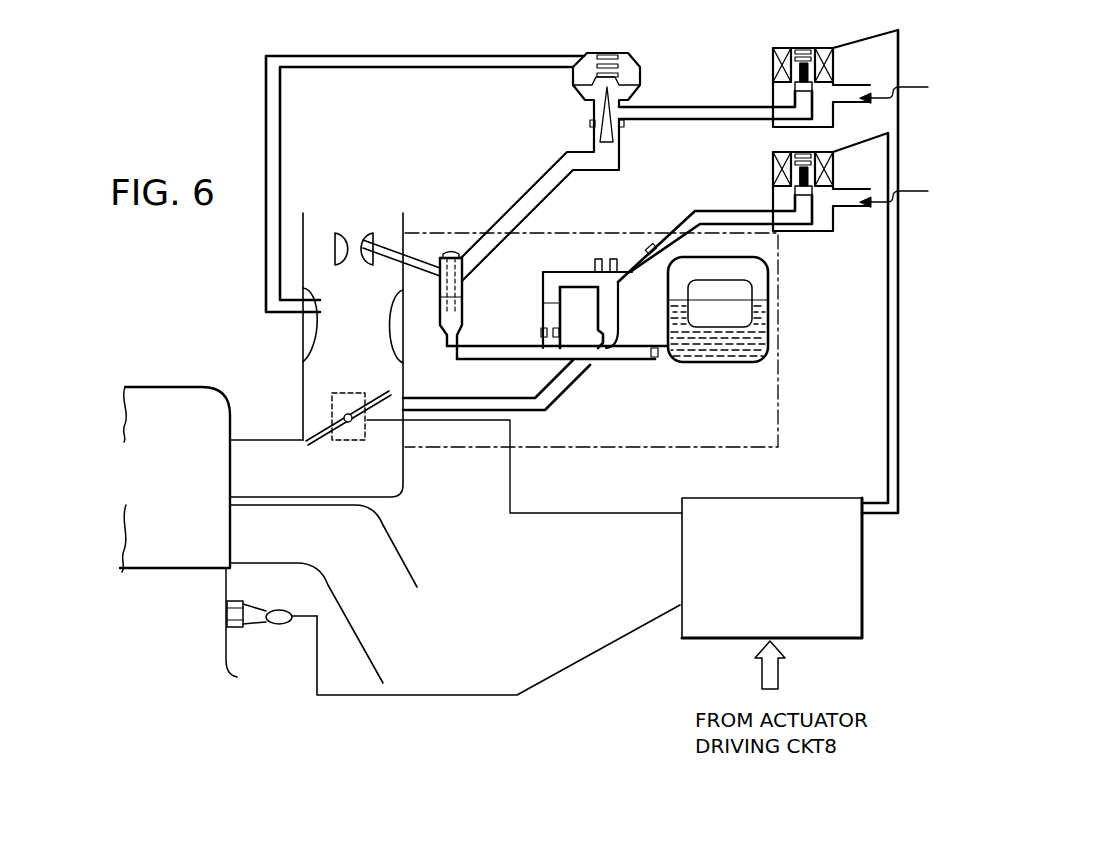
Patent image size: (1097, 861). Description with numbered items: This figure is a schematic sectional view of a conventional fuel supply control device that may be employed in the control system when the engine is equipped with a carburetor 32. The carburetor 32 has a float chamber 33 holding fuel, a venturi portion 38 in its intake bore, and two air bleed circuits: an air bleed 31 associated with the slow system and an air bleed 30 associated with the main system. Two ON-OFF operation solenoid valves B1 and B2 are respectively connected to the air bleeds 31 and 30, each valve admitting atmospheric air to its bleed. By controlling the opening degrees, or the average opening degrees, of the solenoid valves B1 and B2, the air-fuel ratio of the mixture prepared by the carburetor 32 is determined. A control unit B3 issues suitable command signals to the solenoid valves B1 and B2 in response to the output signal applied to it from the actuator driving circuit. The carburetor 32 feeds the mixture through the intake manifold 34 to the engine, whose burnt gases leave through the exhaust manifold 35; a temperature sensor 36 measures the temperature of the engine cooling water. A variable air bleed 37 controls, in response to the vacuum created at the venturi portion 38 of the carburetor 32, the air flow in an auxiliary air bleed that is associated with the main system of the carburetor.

The air bleed 30 is at (462, 305).
The air bleed 31 is at (608, 293).
The carburetor 32 is at (674, 412).
The float chamber 33 is at (765, 283).
The intake manifold 34 is at (364, 475).
The exhaust manifold 35 is at (364, 568).
The temperature sensor 36 is at (246, 628).
The variable air bleed 37 is at (612, 53).
The venturi portion 38 is at (351, 318).
The ON-OFF operation solenoid valve B1 is at (923, 210).
The ON-OFF operation solenoid valve B2 is at (806, 48).
The control unit B3 is at (862, 557).